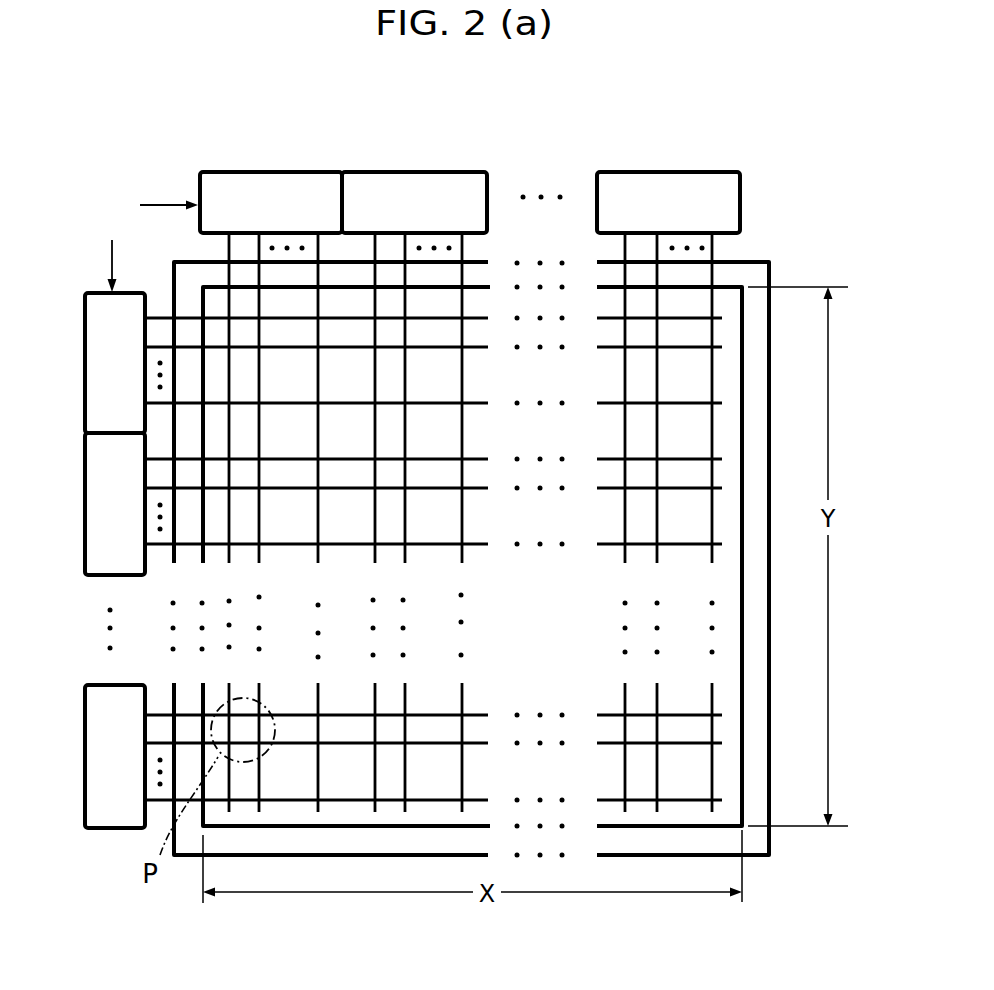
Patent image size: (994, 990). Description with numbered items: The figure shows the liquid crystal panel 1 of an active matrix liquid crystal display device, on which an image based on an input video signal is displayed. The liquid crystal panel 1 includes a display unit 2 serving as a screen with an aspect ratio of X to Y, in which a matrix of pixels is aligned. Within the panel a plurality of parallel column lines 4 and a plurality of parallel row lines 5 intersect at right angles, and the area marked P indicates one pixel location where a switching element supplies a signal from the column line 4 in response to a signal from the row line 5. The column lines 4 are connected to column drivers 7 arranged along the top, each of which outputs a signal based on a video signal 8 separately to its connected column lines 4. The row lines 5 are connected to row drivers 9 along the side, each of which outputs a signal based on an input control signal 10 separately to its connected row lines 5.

The liquid crystal panel 1 is at (770, 842).
The display unit 2 is at (727, 287).
The column lines 4 is at (229, 383).
The row lines 5 is at (325, 347).
The column driver 7 is at (262, 172).
The video signal 8 is at (162, 205).
The row driver 9 is at (85, 368).
The input control signal 10 is at (112, 258).